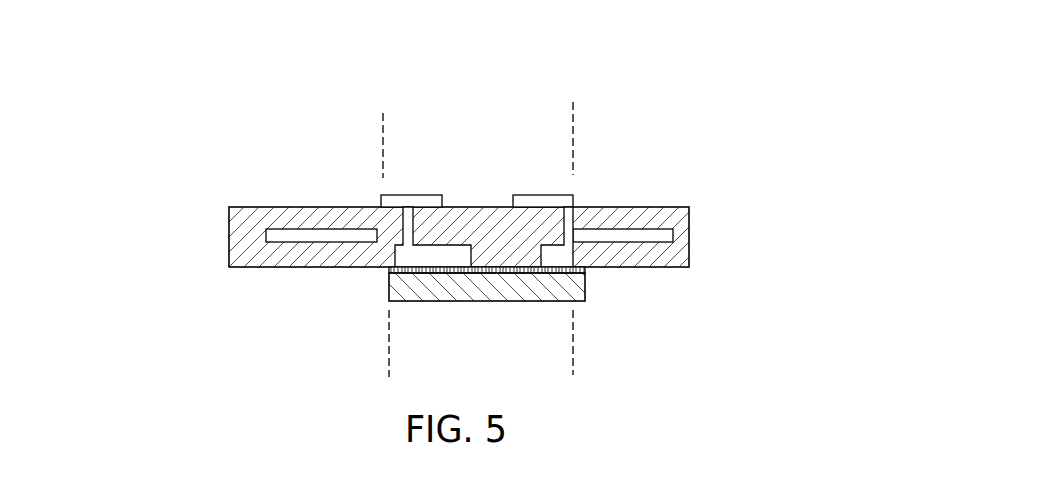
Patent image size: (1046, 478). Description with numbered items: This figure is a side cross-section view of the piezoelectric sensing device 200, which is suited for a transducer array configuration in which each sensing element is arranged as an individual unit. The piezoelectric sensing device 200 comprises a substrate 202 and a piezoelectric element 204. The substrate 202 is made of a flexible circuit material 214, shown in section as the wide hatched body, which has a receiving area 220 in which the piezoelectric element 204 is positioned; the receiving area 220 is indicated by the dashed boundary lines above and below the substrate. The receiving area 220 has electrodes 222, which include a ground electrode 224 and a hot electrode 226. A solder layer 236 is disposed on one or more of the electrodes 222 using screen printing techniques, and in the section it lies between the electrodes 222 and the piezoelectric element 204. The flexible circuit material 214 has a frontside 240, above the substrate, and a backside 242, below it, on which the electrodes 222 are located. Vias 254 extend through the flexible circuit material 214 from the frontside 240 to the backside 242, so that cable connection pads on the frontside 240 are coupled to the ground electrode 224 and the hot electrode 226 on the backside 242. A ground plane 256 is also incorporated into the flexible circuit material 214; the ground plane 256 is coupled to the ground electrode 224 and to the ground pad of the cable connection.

The piezoelectric sensing device 200 is at (463, 203).
The substrate 202 is at (435, 235).
The piezoelectric element 204 is at (377, 316).
The flexible circuit material 214 is at (708, 207).
The receiving area 220 is at (573, 142).
The electrodes 222 is at (545, 237).
The ground electrode 224 is at (568, 252).
The hot electrode 226 is at (410, 255).
The solder layer 236 is at (395, 268).
The frontside 240 is at (664, 176).
The backside 242 is at (684, 346).
The vias 254 is at (403, 223).
The ground plane 256 is at (285, 237).